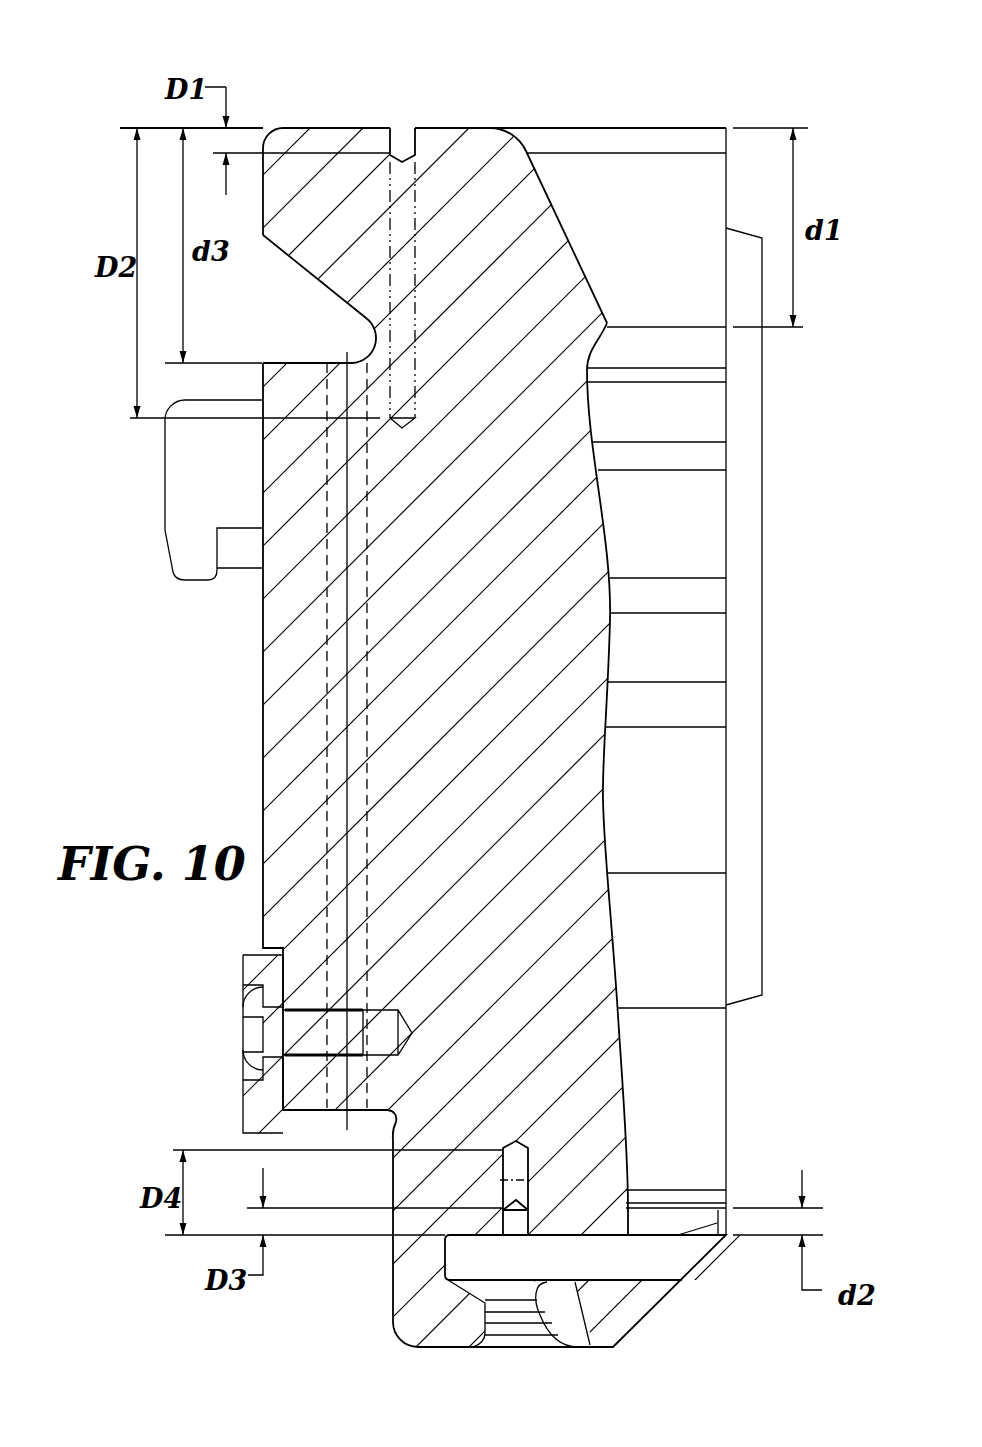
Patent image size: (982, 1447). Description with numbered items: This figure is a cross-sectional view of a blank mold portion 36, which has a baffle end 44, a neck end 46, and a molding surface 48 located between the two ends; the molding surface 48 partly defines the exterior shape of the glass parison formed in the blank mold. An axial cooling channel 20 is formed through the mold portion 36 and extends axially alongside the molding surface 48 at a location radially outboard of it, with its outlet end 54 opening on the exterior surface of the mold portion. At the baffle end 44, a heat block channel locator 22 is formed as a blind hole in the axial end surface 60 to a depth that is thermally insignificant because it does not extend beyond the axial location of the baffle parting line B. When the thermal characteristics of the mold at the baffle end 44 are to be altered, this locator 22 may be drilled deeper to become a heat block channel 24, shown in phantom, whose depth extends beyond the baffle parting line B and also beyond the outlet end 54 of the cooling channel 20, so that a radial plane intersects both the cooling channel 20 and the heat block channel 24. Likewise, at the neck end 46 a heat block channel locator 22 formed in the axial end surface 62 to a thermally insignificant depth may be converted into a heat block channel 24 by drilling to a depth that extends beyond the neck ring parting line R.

The axial cooling channel 20 is at (327, 743).
The heat block channel locator 22 is at (409, 131).
The heat block channel 24 is at (416, 196).
The first mold portion 36 is at (220, 40).
The baffle end 44 is at (676, 176).
The neck end 46 is at (704, 1158).
The molding surface 48 is at (587, 393).
The outlet end 54 is at (348, 361).
The axial end surface 60 is at (305, 127).
The axial end surface 62 is at (480, 1235).
The baffle parting line B is at (607, 323).
The neck ring parting line R is at (627, 1210).